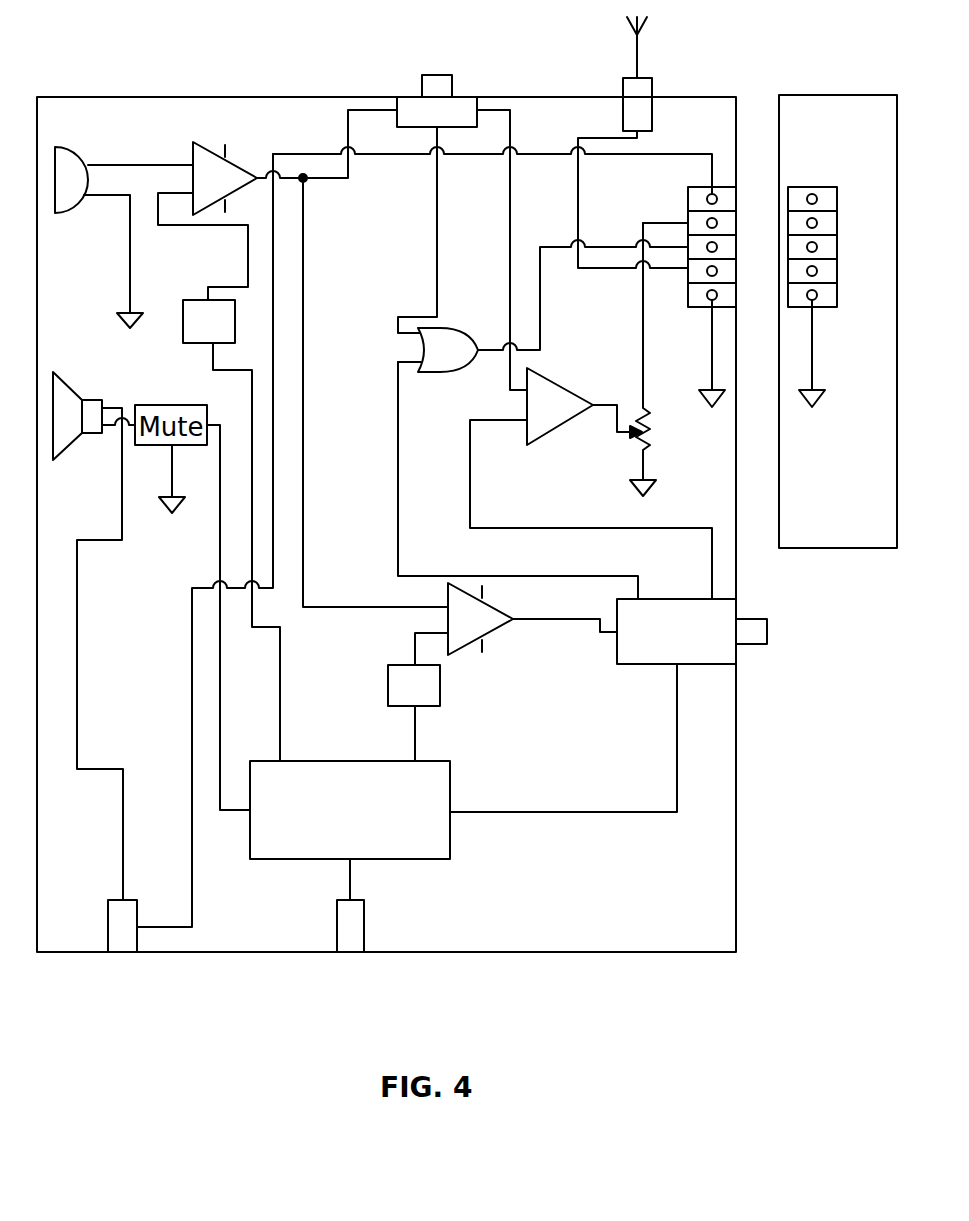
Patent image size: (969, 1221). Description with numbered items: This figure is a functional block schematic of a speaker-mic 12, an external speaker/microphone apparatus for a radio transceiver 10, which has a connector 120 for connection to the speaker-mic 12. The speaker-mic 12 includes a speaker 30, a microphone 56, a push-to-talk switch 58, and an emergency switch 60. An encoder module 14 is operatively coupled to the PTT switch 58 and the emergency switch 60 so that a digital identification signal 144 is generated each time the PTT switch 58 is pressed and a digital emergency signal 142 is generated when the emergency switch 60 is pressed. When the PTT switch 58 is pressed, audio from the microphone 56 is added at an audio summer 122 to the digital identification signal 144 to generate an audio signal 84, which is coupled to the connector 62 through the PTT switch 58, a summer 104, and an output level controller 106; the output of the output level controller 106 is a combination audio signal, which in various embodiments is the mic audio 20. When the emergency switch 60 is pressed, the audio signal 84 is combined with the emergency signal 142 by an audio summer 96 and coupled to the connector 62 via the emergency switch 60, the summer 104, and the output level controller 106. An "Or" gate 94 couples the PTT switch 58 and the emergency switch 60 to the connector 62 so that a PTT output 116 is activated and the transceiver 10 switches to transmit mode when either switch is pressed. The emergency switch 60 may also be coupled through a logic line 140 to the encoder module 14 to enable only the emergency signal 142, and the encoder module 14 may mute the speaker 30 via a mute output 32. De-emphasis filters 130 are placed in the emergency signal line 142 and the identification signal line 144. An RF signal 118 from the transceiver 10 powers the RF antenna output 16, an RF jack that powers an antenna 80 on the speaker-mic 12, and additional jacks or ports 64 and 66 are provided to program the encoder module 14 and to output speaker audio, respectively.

The radio transceiver 10 is at (822, 96).
The speaker-mic 12 is at (110, 97).
The encoder module 14 is at (397, 860).
The RF antenna output 16 is at (655, 82).
The mic audio 20 is at (643, 333).
The speaker 30 is at (70, 385).
The mute output 32 is at (236, 812).
The microphone 56 is at (72, 150).
The push-to-talk (PTT) switch 58 is at (480, 100).
The emergency switch 60 is at (670, 665).
The connector 62 is at (716, 191).
The jack or port 64 is at (345, 900).
The jack or port 66 is at (115, 900).
The antenna 80 is at (640, 57).
The audio signal 84 is at (325, 182).
The "Or" gate 94 is at (445, 328).
The audio summer 96 is at (497, 628).
The summer 104 is at (548, 434).
The output level controller 106 is at (641, 406).
The PTT output 116 is at (600, 247).
The RF signal 118 is at (580, 190).
The connector 120 is at (812, 191).
The audio summer 122 is at (235, 166).
The de-emphasis filter 130 is at (207, 300).
The logic line 140 is at (598, 812).
The emergency signal 142 is at (415, 735).
The digital identification signal 144 is at (280, 712).